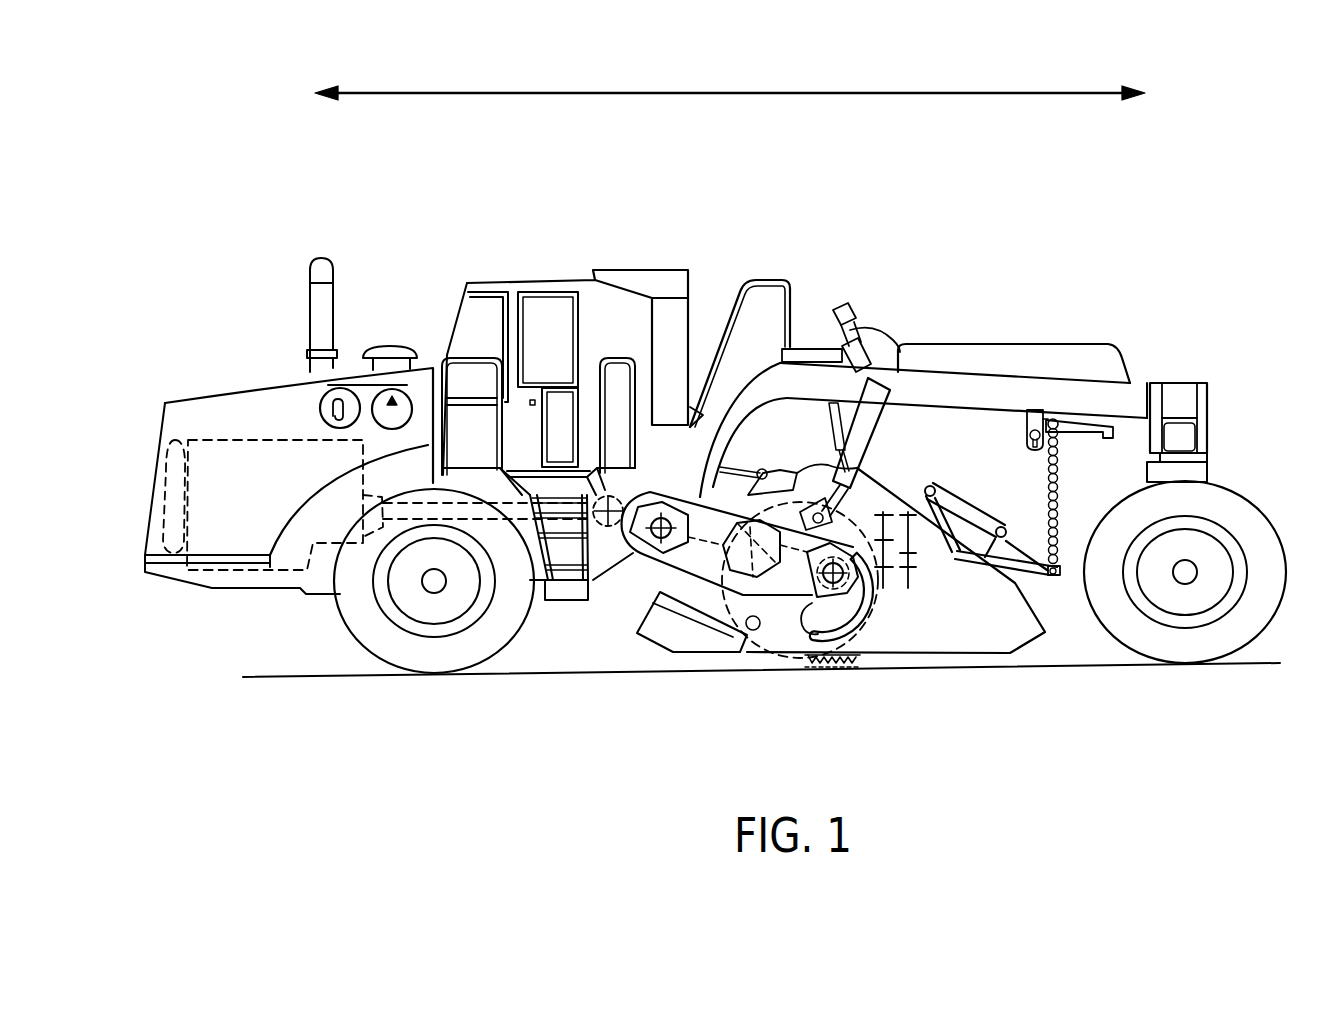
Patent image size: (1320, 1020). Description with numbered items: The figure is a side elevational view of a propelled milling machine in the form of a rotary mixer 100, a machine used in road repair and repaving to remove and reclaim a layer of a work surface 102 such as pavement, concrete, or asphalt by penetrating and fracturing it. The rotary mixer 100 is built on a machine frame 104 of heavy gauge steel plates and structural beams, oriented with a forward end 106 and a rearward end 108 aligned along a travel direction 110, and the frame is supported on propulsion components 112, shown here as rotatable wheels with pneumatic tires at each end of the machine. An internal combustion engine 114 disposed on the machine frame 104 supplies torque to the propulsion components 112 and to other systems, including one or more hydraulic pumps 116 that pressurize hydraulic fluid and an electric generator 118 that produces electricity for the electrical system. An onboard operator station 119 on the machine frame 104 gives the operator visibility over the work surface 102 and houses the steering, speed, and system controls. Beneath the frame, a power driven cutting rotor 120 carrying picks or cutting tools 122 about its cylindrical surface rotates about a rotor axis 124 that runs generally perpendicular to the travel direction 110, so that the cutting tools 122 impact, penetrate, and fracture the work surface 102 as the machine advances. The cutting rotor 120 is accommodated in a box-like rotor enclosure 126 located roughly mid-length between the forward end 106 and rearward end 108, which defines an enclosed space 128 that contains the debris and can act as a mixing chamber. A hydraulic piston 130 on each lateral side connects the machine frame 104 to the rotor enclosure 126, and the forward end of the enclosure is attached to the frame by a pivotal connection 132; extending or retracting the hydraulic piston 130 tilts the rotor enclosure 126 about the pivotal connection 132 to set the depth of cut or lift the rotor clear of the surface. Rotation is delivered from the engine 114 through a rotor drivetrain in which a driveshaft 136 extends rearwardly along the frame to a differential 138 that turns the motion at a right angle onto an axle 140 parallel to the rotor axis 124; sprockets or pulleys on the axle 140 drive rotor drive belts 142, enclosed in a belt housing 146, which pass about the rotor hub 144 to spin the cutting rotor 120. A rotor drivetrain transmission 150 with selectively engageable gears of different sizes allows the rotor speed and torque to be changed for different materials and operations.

The rotary mixer 100 is at (988, 278).
The work surface 102 is at (268, 676).
The machine frame 104 is at (803, 377).
The forward end 106 is at (198, 395).
The rearward end 108 is at (1130, 400).
The travel direction 110 is at (690, 92).
The propulsion components 112 is at (363, 628).
The internal combustion engine 114 is at (202, 458).
The hydraulic pump 116 is at (392, 397).
The electric generator 118 is at (340, 397).
The operator station 119 is at (533, 283).
The cutting rotor 120 is at (903, 607).
The cutting tools 122 is at (857, 657).
The rotor axis 124 is at (828, 607).
The rotor enclosure 126 is at (977, 627).
The enclosed space 128 is at (1030, 667).
The hydraulic piston 130 is at (873, 380).
The pivotal connection 132 is at (660, 545).
The driveshaft 136 is at (483, 510).
The differential 138 is at (628, 495).
The axle 140 is at (623, 503).
The rotor drive belts 142 is at (698, 525).
The rotor hub 144 is at (830, 582).
The belt housing 146 is at (697, 425).
The rotor drivetrain transmission 150 is at (938, 525).